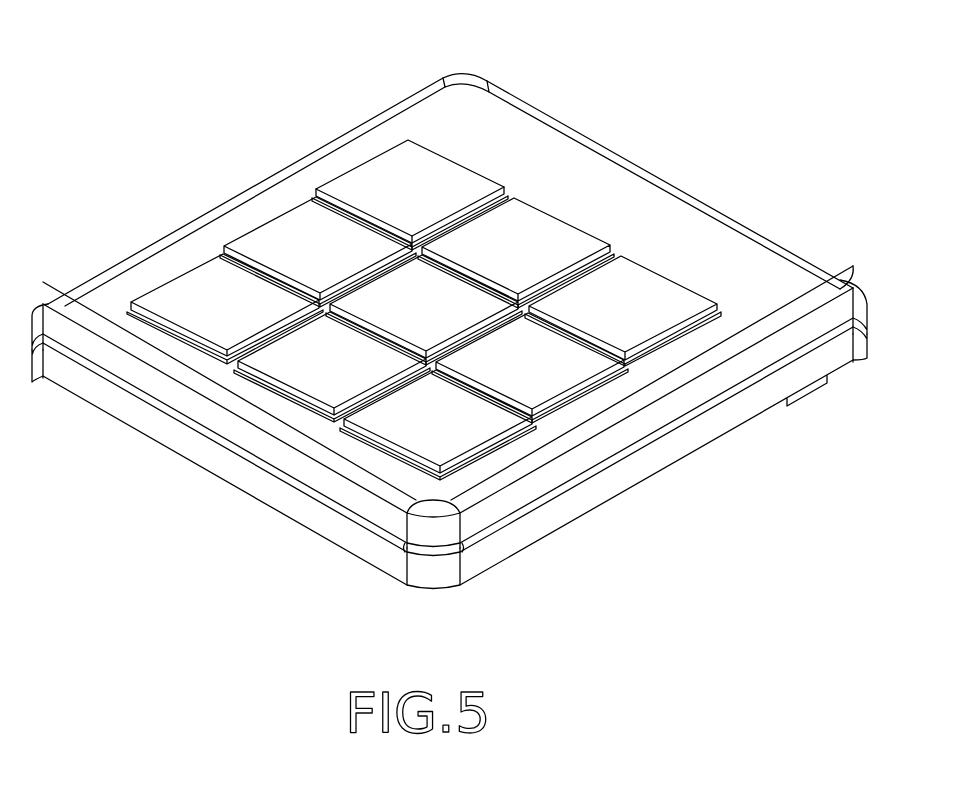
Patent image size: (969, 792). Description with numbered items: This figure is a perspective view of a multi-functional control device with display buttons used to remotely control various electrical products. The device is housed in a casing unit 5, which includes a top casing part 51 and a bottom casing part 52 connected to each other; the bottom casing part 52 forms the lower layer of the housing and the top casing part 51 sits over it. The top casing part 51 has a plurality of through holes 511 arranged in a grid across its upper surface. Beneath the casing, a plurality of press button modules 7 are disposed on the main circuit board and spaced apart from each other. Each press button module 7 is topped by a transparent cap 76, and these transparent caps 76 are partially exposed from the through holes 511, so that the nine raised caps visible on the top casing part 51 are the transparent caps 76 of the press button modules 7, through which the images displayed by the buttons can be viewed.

The casing unit 5 is at (449, 299).
The top casing part 51 is at (735, 363).
The through holes 511 is at (473, 173).
The bottom casing part 52 is at (658, 460).
The press button modules 7 is at (163, 272).
The transparent cap 76 is at (392, 183).